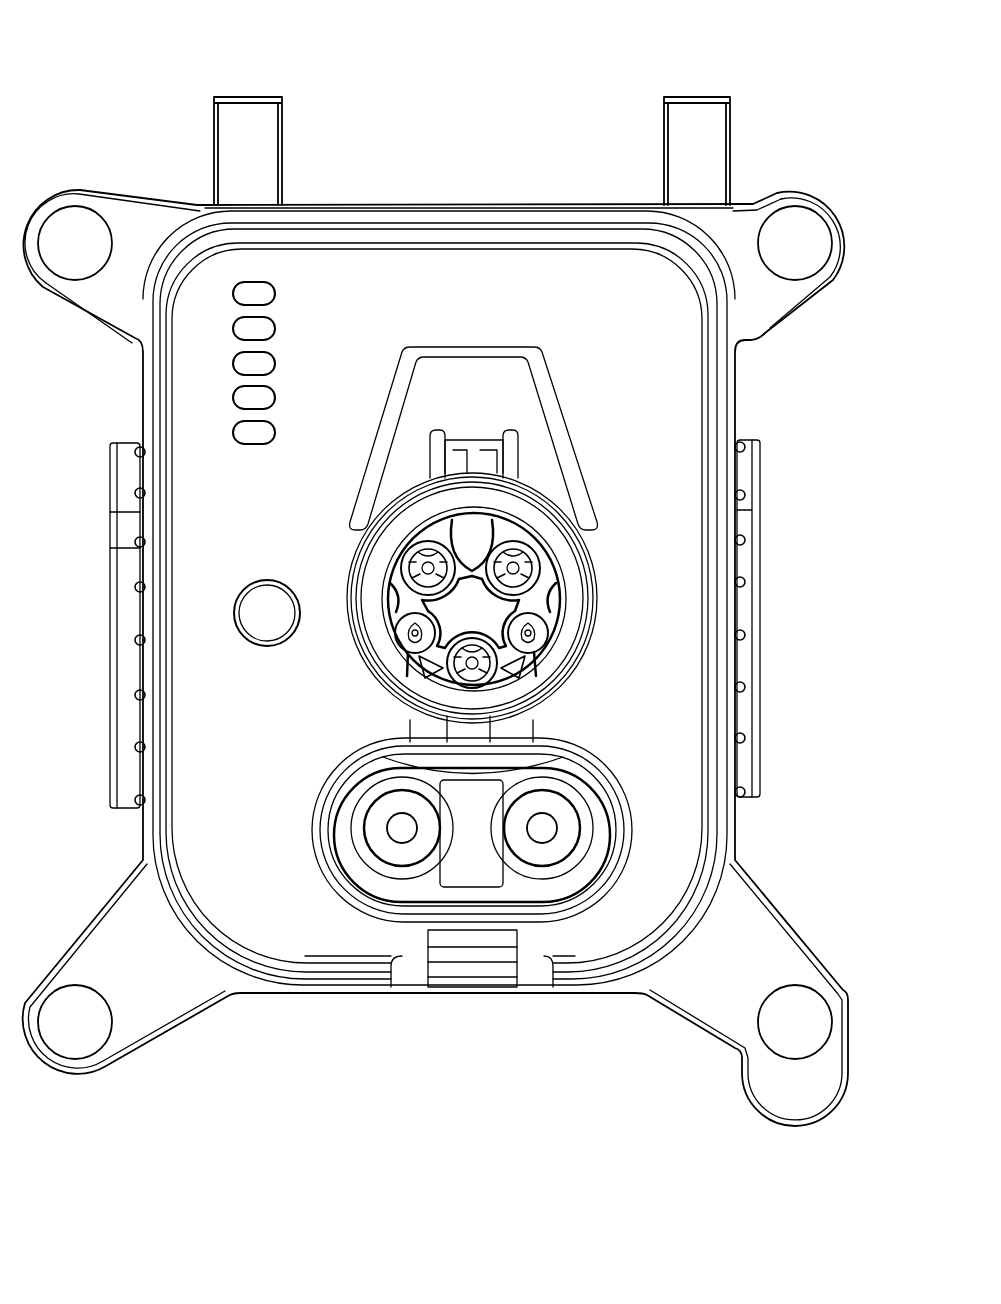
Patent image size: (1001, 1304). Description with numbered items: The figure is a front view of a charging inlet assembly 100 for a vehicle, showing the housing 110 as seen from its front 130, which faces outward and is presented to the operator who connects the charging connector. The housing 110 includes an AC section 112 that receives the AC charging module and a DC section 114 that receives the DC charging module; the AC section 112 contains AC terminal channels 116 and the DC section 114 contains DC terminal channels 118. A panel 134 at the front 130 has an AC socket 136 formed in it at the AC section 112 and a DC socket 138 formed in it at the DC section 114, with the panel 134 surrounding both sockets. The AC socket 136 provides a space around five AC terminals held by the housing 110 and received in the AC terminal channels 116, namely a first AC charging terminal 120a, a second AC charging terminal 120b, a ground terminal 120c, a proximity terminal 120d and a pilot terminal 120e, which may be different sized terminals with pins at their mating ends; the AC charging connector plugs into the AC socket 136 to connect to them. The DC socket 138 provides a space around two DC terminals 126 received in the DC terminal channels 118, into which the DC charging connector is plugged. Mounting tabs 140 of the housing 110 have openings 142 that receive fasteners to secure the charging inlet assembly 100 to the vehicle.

The charging inlet assembly 100 is at (130, 62).
The housing 110 is at (667, 637).
The AC section 112 is at (600, 567).
The DC section 114 is at (641, 796).
The AC terminal channels 116 is at (553, 622).
The DC terminal channels 118 is at (590, 797).
The first AC charging terminal 120a is at (428, 568).
The second AC charging terminal 120b is at (513, 568).
The ground terminal 120c is at (473, 688).
The proximity terminal 120d is at (528, 633).
The pilot terminal 120e is at (415, 633).
The DC terminals 126 is at (543, 833).
The front 130 is at (275, 905).
The panel 134 is at (473, 305).
The AC socket 136 is at (550, 523).
The DC socket 138 is at (610, 867).
The mounting tabs 140 is at (123, 1008).
The openings 142 is at (68, 1032).